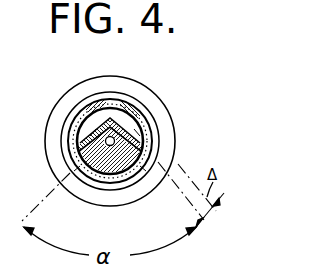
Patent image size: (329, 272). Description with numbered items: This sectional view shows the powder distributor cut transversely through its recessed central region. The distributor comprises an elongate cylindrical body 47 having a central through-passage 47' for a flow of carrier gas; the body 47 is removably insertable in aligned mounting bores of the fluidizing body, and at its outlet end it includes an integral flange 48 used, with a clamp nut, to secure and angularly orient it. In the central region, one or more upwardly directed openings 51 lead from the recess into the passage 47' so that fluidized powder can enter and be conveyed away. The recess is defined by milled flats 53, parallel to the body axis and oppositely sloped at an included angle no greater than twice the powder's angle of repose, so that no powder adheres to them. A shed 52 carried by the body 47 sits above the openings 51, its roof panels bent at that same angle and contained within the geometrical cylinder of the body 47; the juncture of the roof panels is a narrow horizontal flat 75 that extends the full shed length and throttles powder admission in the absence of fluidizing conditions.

The elongate cylindrical body 47 is at (99, 171).
The central through-passage 47' is at (134, 186).
The integral flange 48 is at (76, 98).
The upwardly directed openings 51 is at (88, 118).
The shed 52 is at (100, 108).
The milled flats 53 is at (80, 152).
The narrow horizontal flat 75 is at (112, 116).